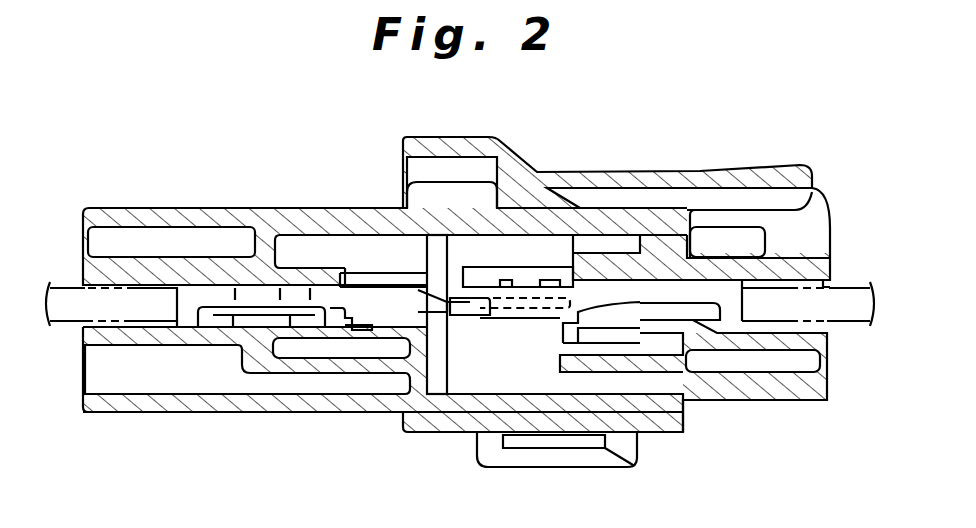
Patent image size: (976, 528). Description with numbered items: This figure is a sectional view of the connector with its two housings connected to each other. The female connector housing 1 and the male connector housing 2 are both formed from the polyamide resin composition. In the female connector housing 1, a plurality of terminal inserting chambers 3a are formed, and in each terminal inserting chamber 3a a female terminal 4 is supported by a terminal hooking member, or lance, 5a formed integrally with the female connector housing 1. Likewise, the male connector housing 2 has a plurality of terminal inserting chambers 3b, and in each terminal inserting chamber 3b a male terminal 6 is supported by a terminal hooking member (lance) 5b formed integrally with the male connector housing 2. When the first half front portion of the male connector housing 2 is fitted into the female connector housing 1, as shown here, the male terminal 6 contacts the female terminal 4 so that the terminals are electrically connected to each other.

The female connector housing 1 is at (747, 388).
The male connector housing 2 is at (117, 382).
The terminal inserting chamber 3a is at (830, 337).
The terminal inserting chamber 3b is at (83, 323).
The female terminal 4 is at (728, 293).
The terminal hooking member (lance) 5a is at (612, 330).
The terminal hooking member (lance) 5b is at (317, 330).
The male terminal 6 is at (390, 313).